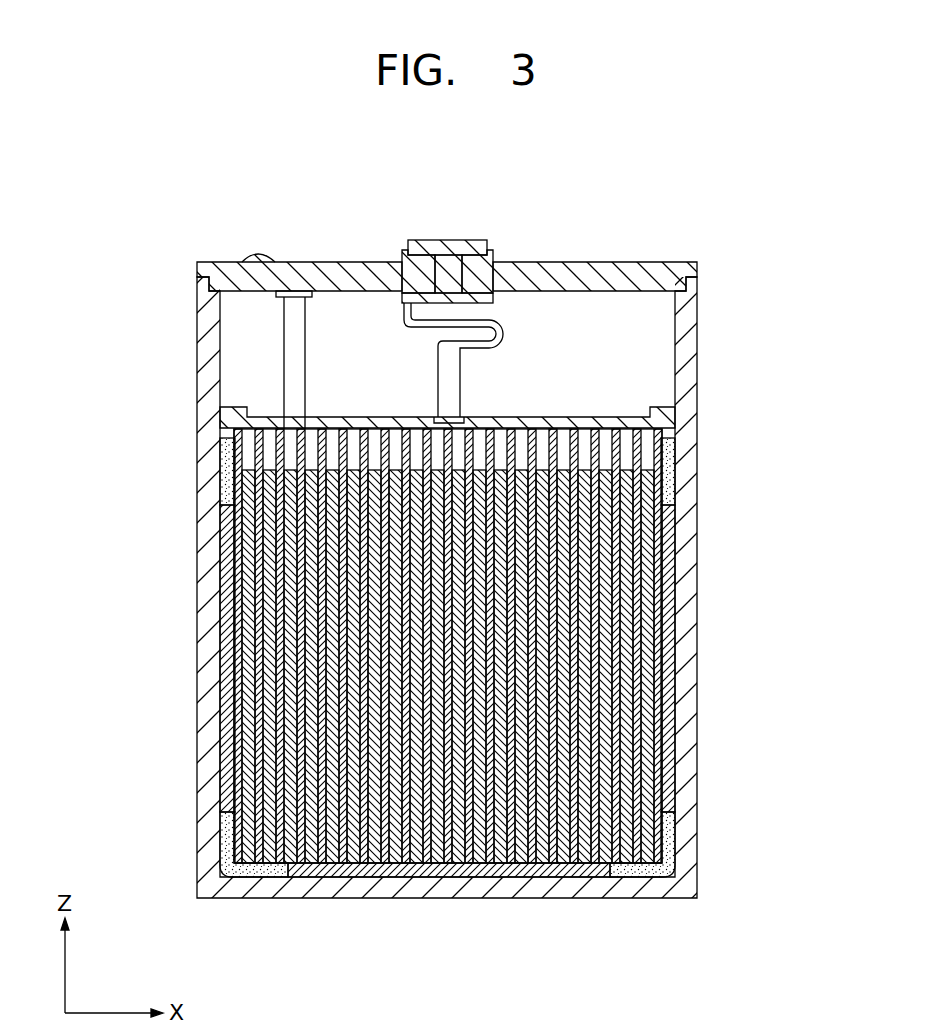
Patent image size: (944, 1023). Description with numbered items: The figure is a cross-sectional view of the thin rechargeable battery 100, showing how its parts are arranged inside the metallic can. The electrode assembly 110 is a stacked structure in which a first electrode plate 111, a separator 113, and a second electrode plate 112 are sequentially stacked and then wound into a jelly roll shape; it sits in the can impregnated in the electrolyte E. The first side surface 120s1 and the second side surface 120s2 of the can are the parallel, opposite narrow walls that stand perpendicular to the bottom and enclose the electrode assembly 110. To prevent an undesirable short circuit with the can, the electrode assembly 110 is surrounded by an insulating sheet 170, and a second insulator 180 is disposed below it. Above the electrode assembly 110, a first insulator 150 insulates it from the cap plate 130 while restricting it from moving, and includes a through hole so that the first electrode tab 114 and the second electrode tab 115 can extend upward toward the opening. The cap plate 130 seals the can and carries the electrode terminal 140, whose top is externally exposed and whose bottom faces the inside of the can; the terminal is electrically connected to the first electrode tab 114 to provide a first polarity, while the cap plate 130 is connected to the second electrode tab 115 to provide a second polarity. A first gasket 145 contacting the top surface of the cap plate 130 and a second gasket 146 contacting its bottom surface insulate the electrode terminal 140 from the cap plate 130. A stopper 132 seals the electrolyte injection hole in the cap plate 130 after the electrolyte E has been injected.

The rechargeable battery 100 is at (735, 202).
The electrode assembly 110 is at (545, 646).
The first electrode plate 111 is at (648, 527).
The second electrode plate 112 is at (673, 485).
The separator 113 is at (665, 510).
The first electrode tab 114 is at (460, 368).
The second electrode tab 115 is at (284, 352).
The first side surface 120s1 is at (210, 413).
The second side surface 120s2 is at (693, 393).
The cap plate 130 is at (615, 270).
The stopper 132 is at (259, 260).
The electrode terminal 140 is at (447, 248).
The first gasket 145 is at (503, 262).
The second gasket 146 is at (382, 270).
The first insulator 150 is at (670, 422).
The electrolyte E is at (668, 462).
The insulating sheet 170 is at (228, 733).
The second insulator 180 is at (350, 868).